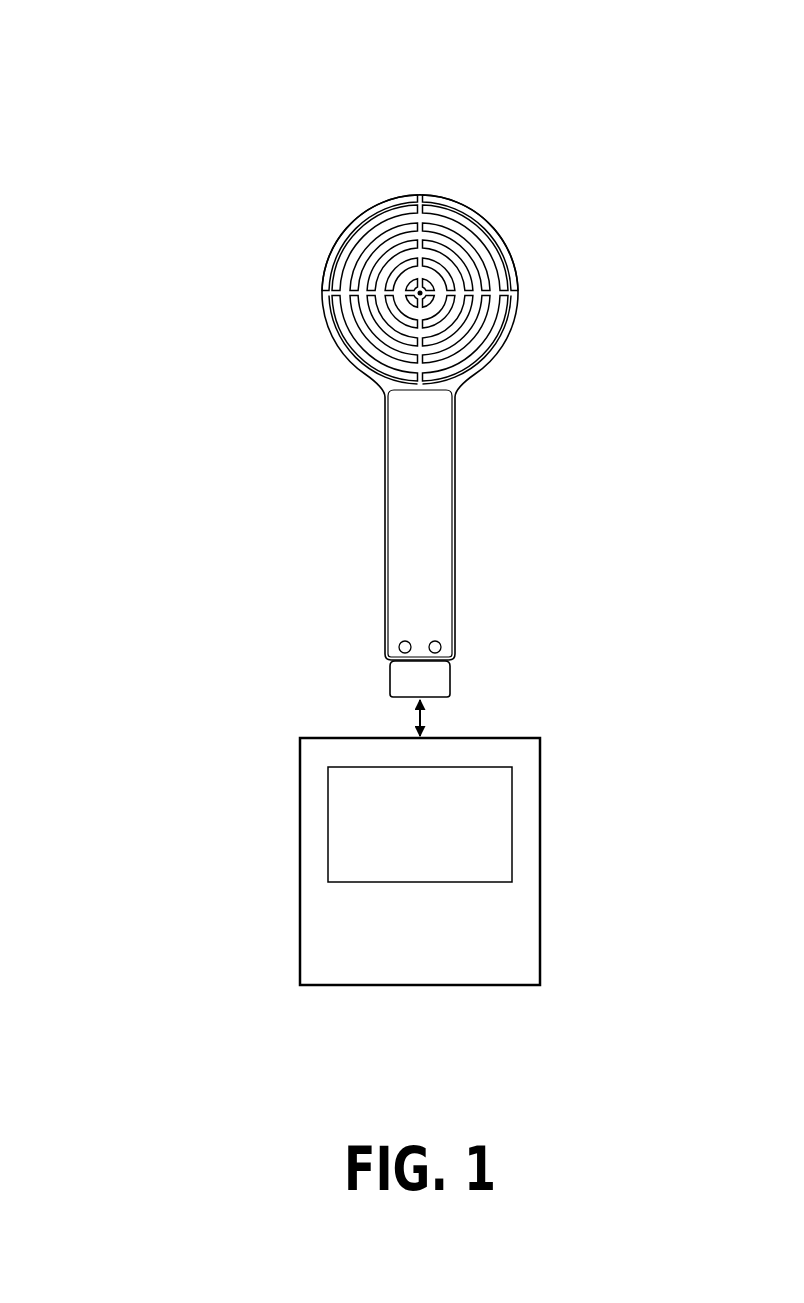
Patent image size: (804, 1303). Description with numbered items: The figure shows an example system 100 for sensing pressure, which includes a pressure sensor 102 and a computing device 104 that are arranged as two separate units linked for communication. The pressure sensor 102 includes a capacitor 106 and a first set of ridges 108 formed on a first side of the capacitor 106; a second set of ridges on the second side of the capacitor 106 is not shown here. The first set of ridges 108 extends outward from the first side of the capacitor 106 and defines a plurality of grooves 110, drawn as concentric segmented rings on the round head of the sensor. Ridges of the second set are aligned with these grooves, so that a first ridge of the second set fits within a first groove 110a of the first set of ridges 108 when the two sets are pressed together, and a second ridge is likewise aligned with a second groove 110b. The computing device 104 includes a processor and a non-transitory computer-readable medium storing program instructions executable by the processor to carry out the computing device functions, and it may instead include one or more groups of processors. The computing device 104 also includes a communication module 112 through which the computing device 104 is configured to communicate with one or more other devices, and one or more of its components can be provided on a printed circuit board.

The system for sensing pressure 100 is at (78, 131).
The pressure sensor 102 is at (393, 161).
The computing device 104 is at (420, 861).
The capacitor 106 is at (438, 196).
The first set of ridges 108 is at (362, 219).
The plurality of grooves 110 is at (347, 259).
The first groove 110a is at (420, 294).
The second groove 110b is at (423, 272).
The communication module 112 is at (420, 824).